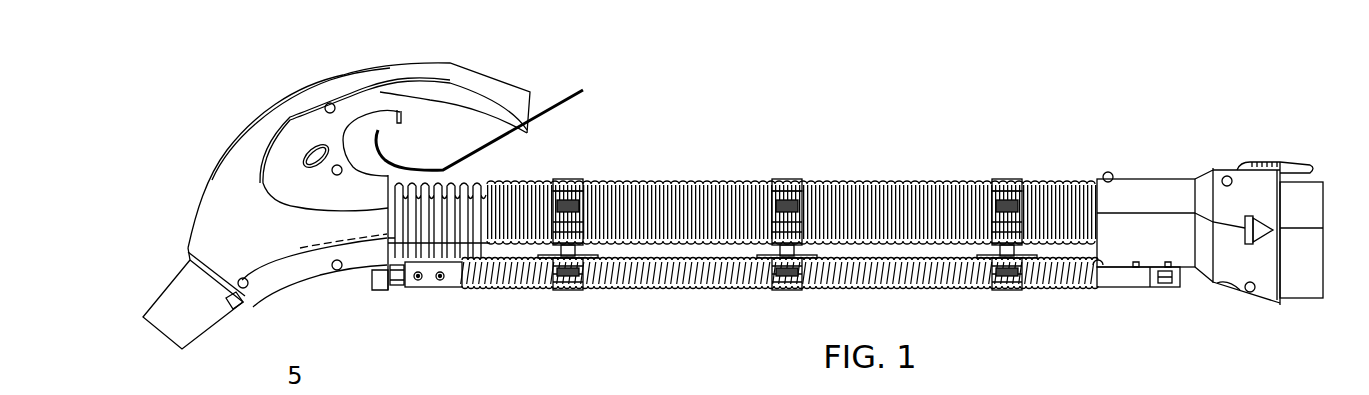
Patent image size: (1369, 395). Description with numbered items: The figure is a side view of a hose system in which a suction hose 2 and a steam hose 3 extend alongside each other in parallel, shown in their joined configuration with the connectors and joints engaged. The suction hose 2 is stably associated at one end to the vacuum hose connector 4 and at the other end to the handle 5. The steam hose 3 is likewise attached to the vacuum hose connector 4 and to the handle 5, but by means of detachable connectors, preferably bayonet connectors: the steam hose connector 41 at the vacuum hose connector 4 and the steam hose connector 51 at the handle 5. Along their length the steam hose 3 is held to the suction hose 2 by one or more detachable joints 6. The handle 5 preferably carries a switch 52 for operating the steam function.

The suction hose 2 is at (628, 187).
The steam hose 3 is at (705, 282).
The vacuum hose connector 4 is at (1200, 170).
The handle 5 is at (233, 146).
The detachable joints 6 is at (562, 291).
The steam hose connector 41 is at (1135, 282).
The steam hose connector 51 is at (427, 283).
The switch 52 is at (496, 111).